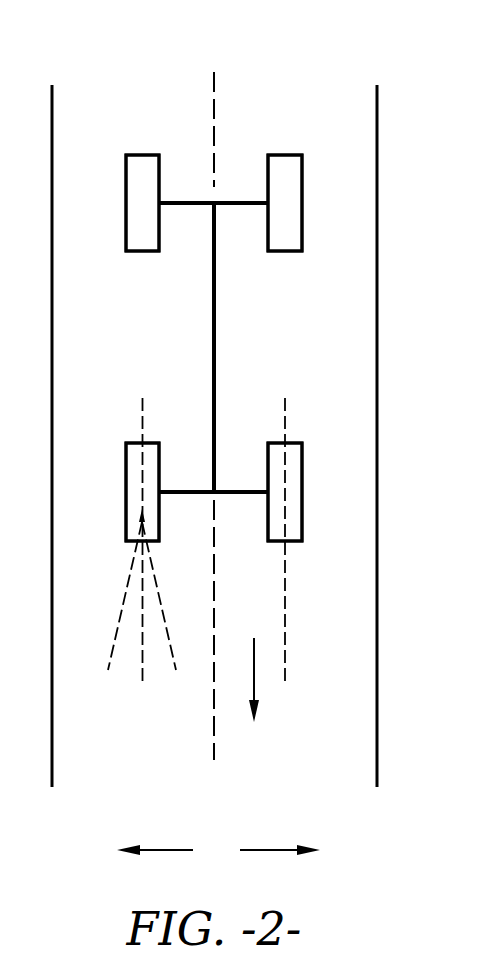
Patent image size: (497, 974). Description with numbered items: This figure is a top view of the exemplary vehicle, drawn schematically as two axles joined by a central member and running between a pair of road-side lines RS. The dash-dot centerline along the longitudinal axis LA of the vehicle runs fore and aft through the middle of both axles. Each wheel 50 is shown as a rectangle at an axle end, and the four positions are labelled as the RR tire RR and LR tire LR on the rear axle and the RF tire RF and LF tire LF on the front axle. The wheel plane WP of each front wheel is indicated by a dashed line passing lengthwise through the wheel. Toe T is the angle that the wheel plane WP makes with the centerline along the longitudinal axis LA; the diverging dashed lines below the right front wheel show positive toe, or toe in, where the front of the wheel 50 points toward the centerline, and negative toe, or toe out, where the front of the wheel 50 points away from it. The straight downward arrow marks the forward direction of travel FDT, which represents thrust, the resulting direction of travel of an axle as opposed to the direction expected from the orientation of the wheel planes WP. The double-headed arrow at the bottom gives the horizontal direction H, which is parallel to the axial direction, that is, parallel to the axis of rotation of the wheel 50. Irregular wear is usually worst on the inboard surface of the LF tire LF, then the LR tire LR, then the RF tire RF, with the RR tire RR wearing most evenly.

The wheel 50 is at (135, 227).
The road surface / roadway side lines RS is at (340, 278).
The longitudinal axis LA is at (216, 416).
The RR tire RR is at (135, 173).
The LR tire LR is at (297, 172).
The RF tire RF is at (132, 513).
The LF tire LF is at (296, 512).
The wheel plane WP is at (215, 525).
The toe T is at (136, 609).
The direction of travel FDT is at (256, 699).
The horizontal direction H is at (218, 852).